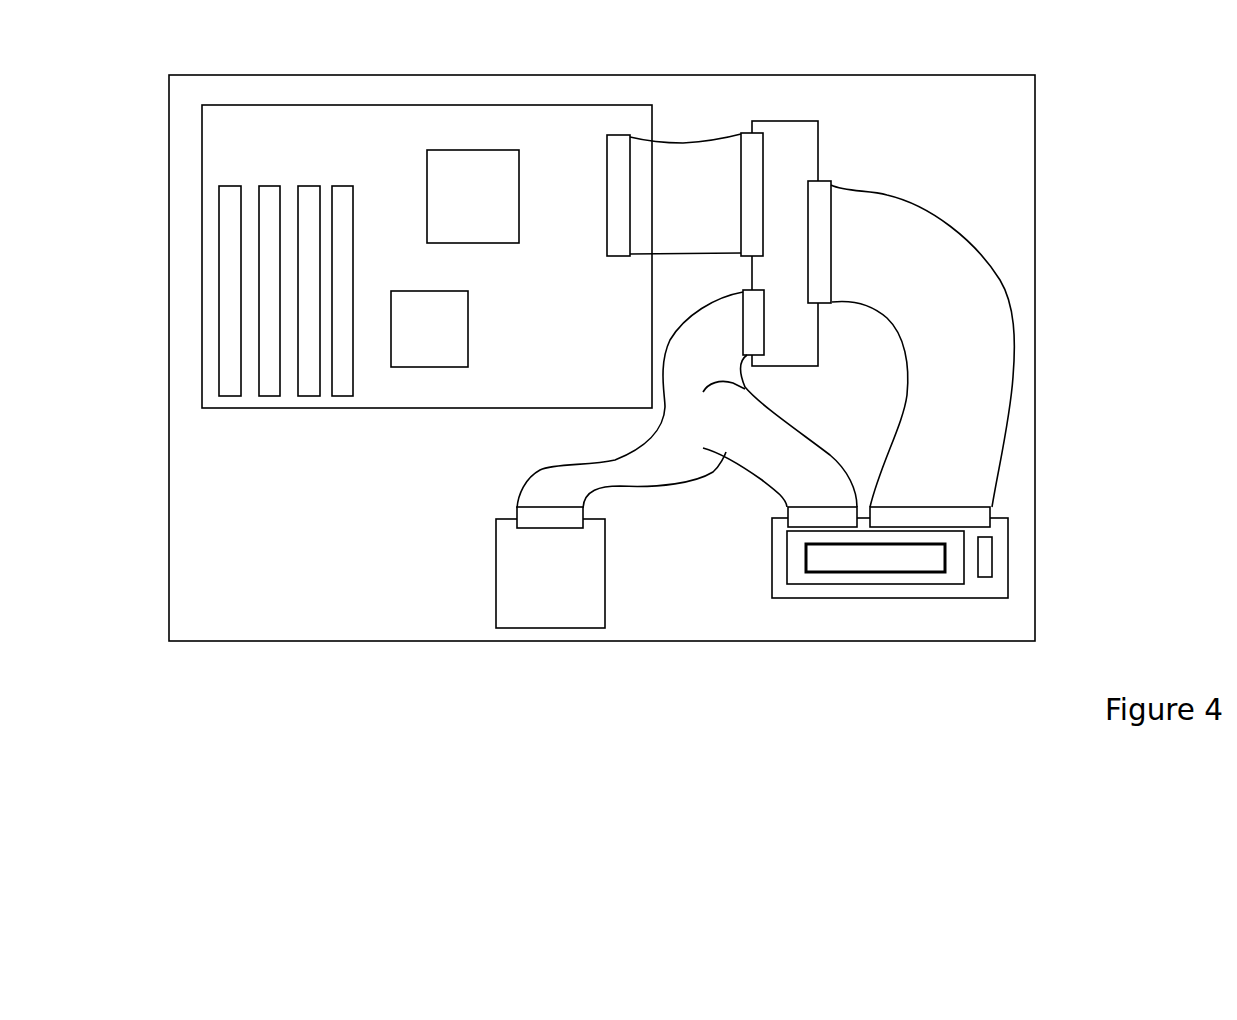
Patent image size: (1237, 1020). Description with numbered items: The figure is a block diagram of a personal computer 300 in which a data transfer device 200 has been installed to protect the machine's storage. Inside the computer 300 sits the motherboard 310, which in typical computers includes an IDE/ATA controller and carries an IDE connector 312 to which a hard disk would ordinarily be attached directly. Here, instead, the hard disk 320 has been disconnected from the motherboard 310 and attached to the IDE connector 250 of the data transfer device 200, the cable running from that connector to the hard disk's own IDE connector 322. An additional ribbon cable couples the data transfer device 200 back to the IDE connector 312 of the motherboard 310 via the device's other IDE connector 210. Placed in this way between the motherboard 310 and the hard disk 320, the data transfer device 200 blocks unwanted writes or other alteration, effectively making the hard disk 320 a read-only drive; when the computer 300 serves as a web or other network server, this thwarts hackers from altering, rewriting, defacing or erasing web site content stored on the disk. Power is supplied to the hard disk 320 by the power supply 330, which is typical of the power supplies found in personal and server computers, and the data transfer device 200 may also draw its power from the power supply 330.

The data transfer device 200 is at (786, 121).
The IDE connector 210 is at (752, 133).
The IDE connector 250 is at (820, 181).
The computer 300 is at (602, 358).
The motherboard 310 is at (427, 256).
The IDE connector 312 is at (620, 135).
The hard disk 320 is at (1013, 557).
The hard disk 322 is at (1000, 512).
The power supply 330 is at (550, 567).